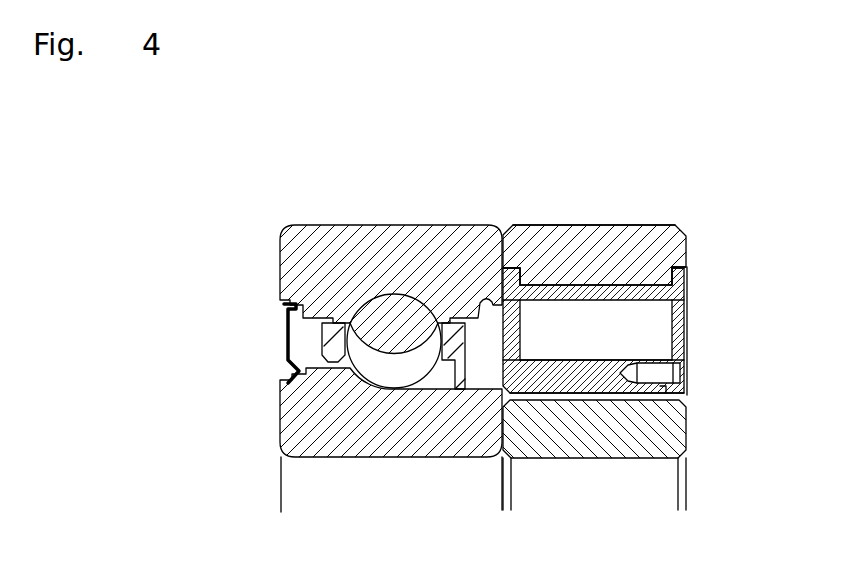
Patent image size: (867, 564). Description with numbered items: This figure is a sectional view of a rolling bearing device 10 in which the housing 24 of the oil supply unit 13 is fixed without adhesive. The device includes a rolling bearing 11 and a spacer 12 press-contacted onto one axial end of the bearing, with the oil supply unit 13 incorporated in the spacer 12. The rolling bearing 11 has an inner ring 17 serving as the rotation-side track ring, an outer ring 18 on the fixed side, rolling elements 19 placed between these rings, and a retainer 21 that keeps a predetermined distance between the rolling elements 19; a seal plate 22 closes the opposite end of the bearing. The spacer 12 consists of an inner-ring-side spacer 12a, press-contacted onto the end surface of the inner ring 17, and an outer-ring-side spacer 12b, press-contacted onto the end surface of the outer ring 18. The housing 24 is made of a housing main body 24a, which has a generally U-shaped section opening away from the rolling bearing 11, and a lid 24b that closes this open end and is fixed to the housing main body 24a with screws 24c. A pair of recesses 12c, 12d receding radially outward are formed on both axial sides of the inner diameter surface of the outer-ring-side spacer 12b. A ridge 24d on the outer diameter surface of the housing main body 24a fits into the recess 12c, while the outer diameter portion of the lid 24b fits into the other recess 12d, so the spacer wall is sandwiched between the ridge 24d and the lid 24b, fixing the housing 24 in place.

The rolling bearing device 10 is at (492, 218).
The rolling bearing 11 is at (354, 221).
The spacer 12 is at (622, 218).
The inner-ring-side spacer 12a is at (535, 432).
The outer-ring-side spacer 12b is at (587, 245).
The recess 12c is at (532, 265).
The recess 12d is at (691, 265).
The oil supply unit 13 is at (700, 308).
The inner ring 17 is at (424, 435).
The outer ring 18 is at (424, 240).
The rolling elements 19 is at (382, 315).
The retainer 21 is at (338, 351).
The seal plate 22 is at (281, 370).
The housing 24 is at (594, 405).
The housing main body 24a is at (613, 388).
The lid 24b is at (683, 338).
The screws 24c is at (668, 373).
The ridge 24d is at (515, 272).